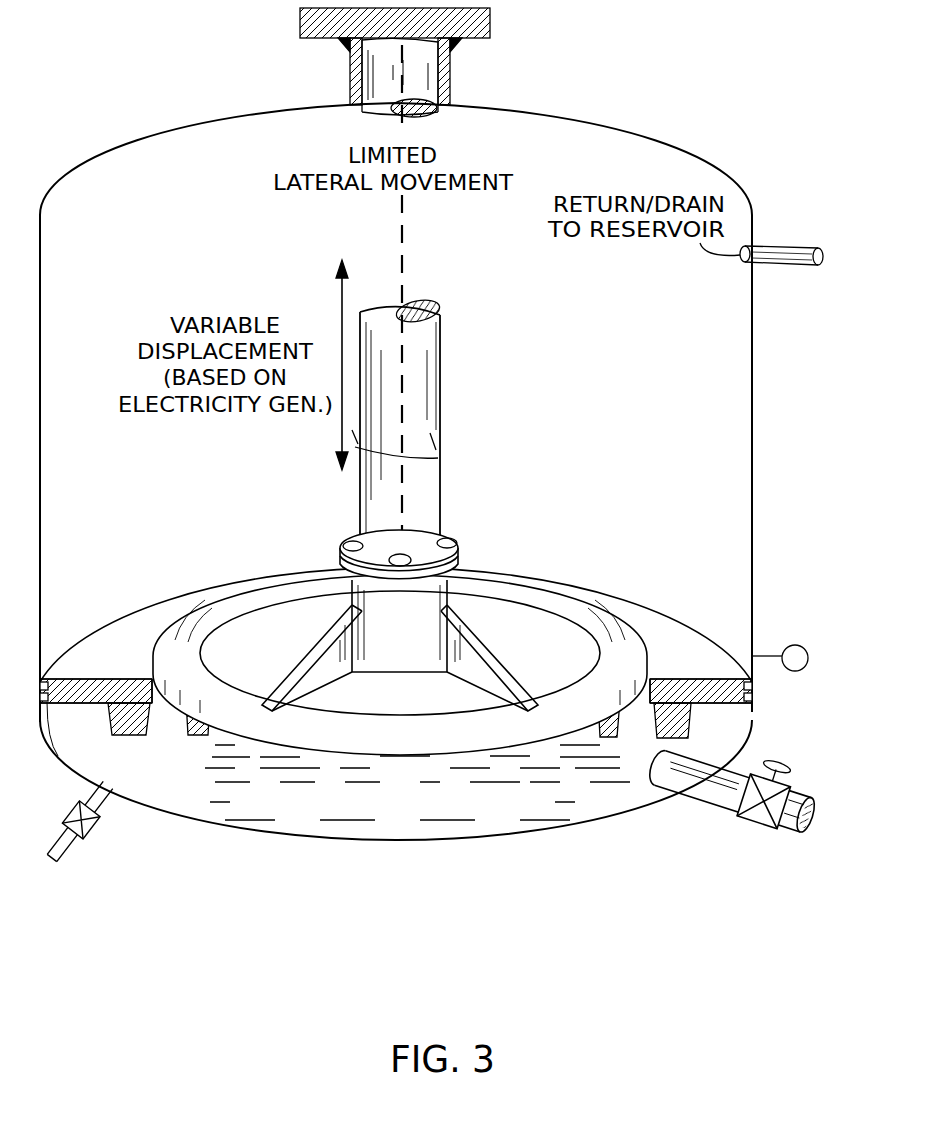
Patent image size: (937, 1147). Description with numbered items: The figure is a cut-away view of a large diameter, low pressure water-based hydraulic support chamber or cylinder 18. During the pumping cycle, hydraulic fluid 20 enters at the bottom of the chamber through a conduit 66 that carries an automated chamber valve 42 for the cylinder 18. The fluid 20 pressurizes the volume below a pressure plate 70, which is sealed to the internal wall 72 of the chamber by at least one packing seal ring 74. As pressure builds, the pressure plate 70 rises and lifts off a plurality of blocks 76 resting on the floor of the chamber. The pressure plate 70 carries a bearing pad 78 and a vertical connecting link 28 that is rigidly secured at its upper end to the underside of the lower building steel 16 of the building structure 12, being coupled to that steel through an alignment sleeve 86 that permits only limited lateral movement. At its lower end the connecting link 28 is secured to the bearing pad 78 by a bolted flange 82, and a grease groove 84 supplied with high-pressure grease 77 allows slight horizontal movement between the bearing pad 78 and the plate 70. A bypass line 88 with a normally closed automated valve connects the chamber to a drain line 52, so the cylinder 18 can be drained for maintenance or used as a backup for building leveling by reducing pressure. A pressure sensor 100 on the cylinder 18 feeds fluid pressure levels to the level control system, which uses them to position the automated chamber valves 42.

The lower building steel 16 is at (507, 28).
The building structure 12 is at (473, 38).
The alignment sleeve 86 is at (450, 82).
The internal wall 72 is at (753, 431).
The hydraulic support chamber 18 is at (770, 518).
The drain line 52 is at (808, 246).
The vertical connecting link 28 is at (443, 332).
The high pressure grease 77 is at (355, 447).
The pressure plate 70 is at (312, 565).
The packing seal ring 74 is at (45, 672).
The bearing pad 78 is at (565, 625).
The grease groove 84 is at (482, 720).
The bolted flange 82 is at (452, 540).
The blocks 76 is at (110, 735).
The hydraulic fluid 20 is at (417, 782).
The pressure sensor 100 is at (805, 668).
The conduit 66 is at (792, 832).
The automated chamber valve 42 is at (743, 815).
The bypass line 88 is at (57, 863).